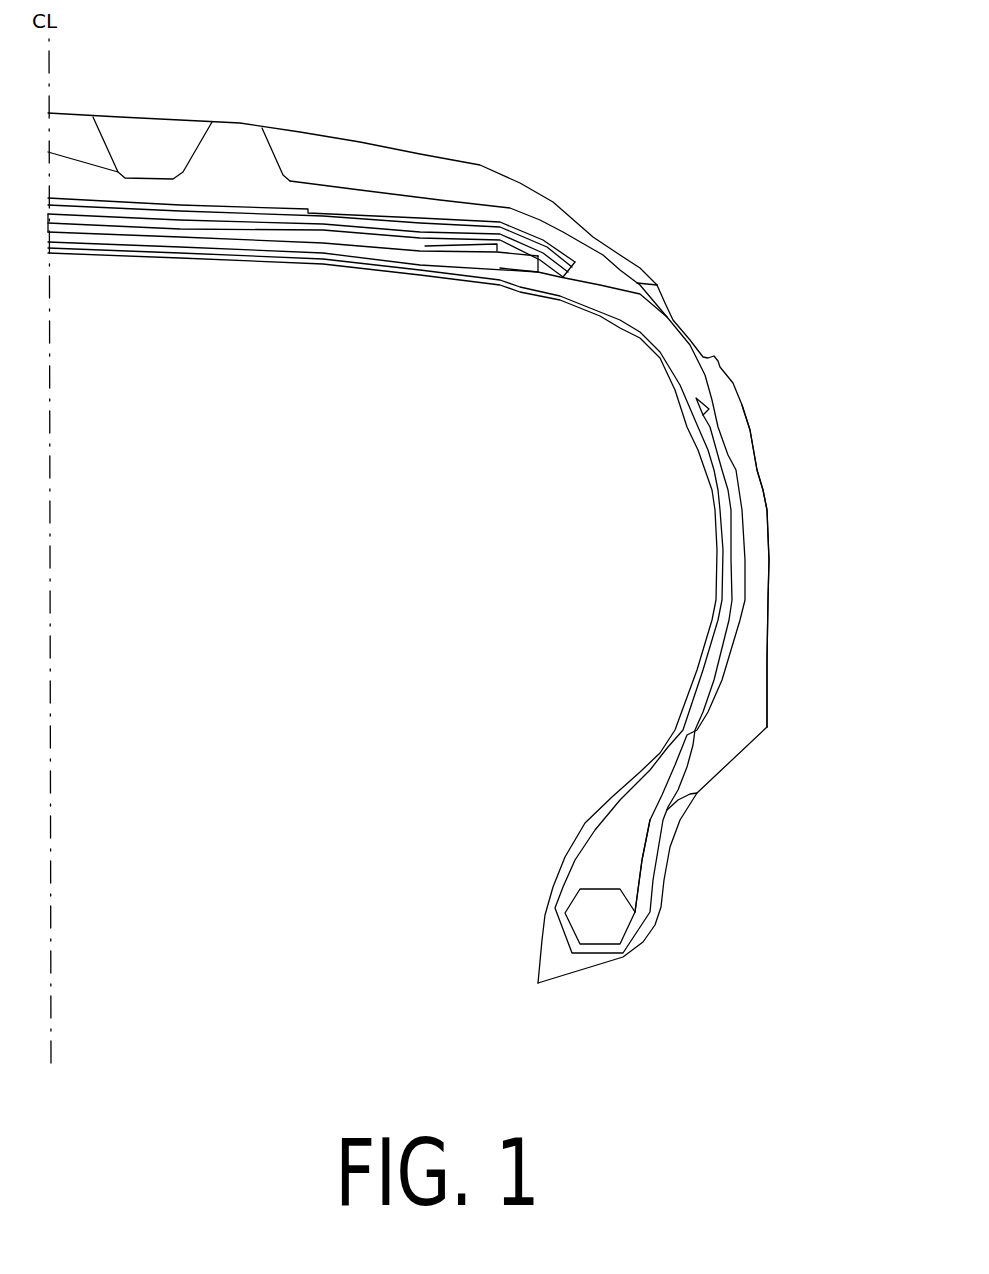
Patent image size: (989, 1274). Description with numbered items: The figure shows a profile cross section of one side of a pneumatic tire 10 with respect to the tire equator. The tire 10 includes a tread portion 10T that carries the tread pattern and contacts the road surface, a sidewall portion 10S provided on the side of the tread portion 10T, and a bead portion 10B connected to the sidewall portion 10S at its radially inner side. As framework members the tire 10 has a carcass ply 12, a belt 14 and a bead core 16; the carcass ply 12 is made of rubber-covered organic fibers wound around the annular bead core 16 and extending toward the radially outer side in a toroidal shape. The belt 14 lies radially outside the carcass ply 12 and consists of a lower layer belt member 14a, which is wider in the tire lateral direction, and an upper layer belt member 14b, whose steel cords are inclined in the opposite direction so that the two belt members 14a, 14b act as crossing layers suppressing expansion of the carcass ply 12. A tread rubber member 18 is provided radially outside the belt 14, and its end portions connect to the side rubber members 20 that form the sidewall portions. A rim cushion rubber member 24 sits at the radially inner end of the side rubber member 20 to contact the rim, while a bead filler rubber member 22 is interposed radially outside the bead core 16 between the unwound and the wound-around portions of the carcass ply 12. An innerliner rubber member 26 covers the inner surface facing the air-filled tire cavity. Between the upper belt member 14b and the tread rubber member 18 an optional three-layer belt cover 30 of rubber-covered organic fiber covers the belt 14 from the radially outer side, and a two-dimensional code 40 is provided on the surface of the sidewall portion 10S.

The pneumatic tire 10 is at (545, 132).
The tread portion 10T is at (282, 110).
The sidewall portion 10S is at (770, 412).
The bead portion 10B is at (682, 906).
The carcass ply 12 is at (569, 299).
The belt 14 is at (337, 322).
The lower layer belt member 14a is at (325, 237).
The upper layer belt member 14b is at (342, 245).
The bead core 16 is at (604, 922).
The tread rubber member 18 is at (440, 207).
The side rubber member 20 is at (762, 465).
The bead filler rubber member 22 is at (625, 853).
The rim cushion rubber member 24 is at (670, 830).
The innerliner rubber member 26 is at (590, 322).
The belt cover 30 is at (400, 226).
The two-dimensional code 40 is at (776, 590).